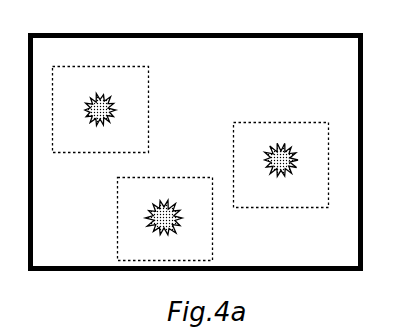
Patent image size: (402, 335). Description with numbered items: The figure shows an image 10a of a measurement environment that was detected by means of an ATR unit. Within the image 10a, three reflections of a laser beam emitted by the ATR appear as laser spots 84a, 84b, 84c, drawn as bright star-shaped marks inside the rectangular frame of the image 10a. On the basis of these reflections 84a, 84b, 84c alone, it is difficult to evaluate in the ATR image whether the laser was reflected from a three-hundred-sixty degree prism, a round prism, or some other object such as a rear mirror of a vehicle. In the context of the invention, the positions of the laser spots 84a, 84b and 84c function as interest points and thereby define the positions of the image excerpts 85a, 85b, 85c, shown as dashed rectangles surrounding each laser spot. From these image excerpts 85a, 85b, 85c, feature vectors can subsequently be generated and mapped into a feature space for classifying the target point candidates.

The image 10a is at (100, 33).
The laser spot 84a is at (105, 107).
The laser spot 84b is at (158, 228).
The laser spot 84c is at (282, 147).
The image excerpt 85a is at (141, 64).
The image excerpt 85b is at (117, 214).
The image excerpt 85c is at (263, 208).